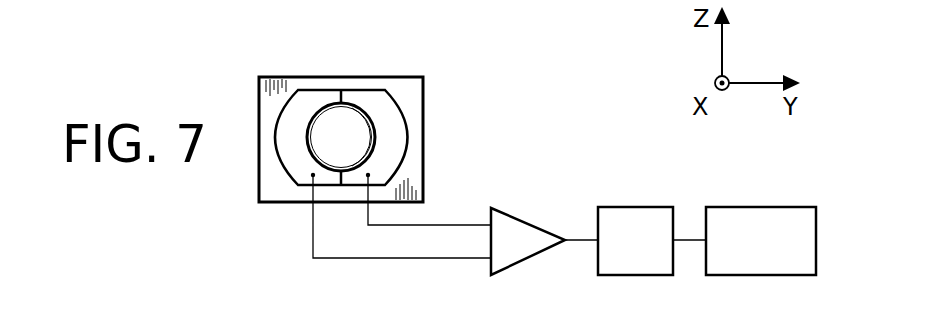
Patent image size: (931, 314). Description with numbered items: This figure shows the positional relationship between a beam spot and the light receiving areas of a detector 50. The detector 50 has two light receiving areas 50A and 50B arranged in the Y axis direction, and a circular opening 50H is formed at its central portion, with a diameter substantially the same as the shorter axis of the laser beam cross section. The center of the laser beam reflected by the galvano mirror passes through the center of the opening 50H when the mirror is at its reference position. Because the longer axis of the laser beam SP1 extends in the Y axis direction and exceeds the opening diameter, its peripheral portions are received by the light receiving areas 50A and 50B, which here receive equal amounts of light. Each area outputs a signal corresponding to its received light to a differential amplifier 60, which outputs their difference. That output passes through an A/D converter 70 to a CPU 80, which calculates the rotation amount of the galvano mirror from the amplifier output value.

The detector 50 is at (437, 82).
The light receiving area 50A is at (307, 98).
The light receiving area 50B is at (375, 98).
The circular opening 50H is at (316, 154).
The laser beam SP1 is at (378, 135).
The differential amplifier 60 is at (520, 218).
The A/D converter 70 is at (653, 168).
The CPU 80 is at (787, 168).